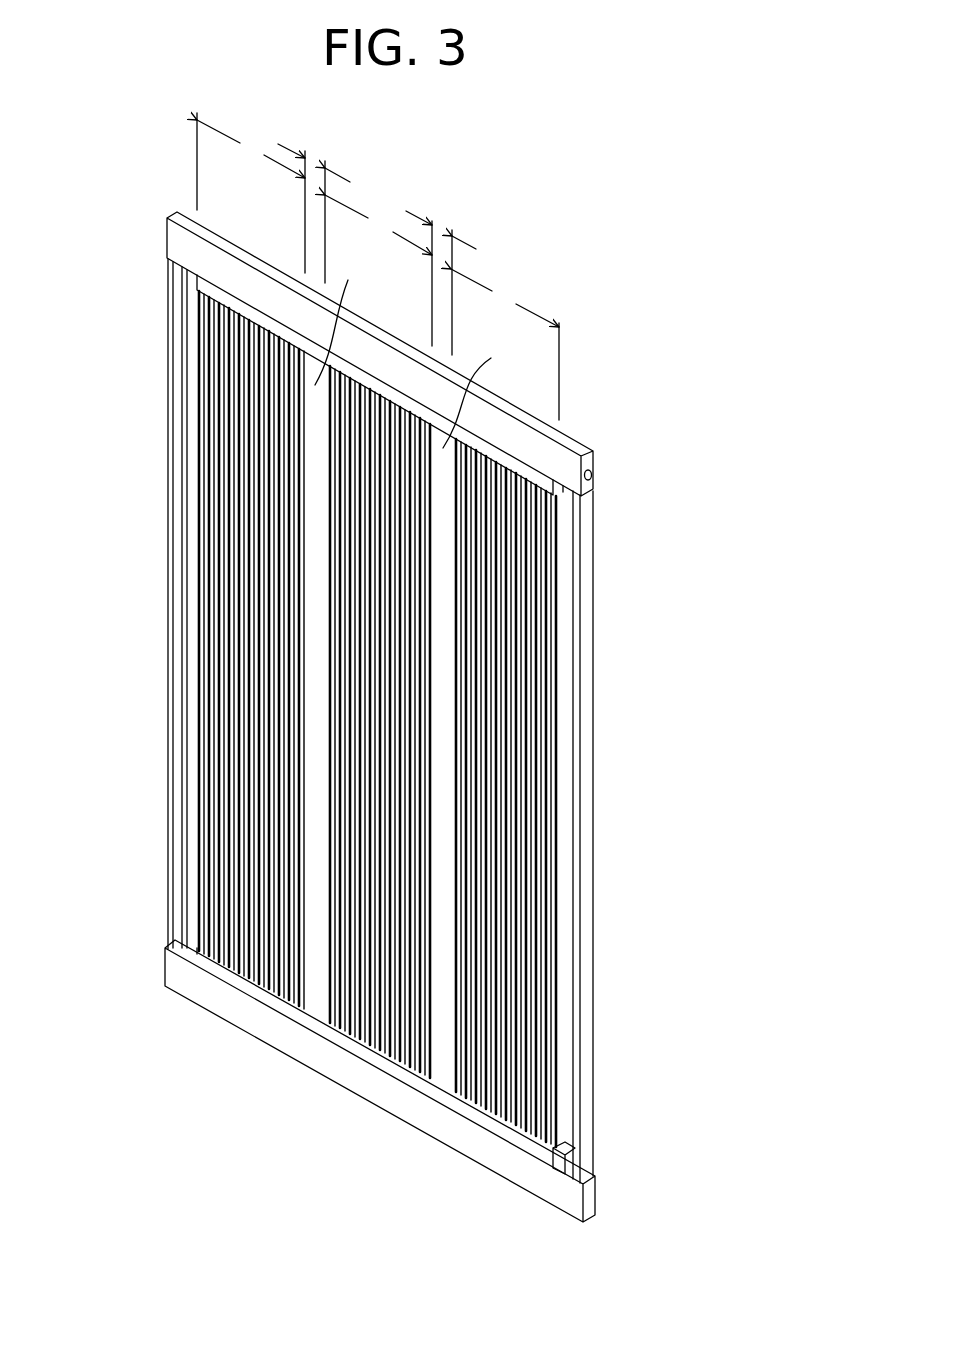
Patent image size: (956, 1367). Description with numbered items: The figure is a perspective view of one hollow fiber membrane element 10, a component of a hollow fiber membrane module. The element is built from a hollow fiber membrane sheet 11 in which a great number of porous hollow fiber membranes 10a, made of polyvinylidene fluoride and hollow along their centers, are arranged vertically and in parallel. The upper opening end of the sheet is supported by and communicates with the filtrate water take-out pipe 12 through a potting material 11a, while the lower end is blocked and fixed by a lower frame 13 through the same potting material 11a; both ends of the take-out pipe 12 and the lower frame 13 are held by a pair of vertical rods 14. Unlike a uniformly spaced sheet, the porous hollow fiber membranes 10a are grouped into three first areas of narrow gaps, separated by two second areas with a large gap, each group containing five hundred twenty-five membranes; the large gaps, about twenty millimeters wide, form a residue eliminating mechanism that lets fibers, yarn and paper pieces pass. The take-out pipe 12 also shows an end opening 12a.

The hollow fiber membrane element 10 is at (620, 345).
The porous hollow fiber membrane 10a is at (236, 743).
The hollow fiber membrane sheet 11 is at (205, 833).
The potting material 11a is at (502, 453).
The filtrate water take-out pipe 12 is at (360, 347).
The hole 12a is at (585, 467).
The lower frame 13 is at (410, 1113).
The vertical rod 14 is at (160, 556).